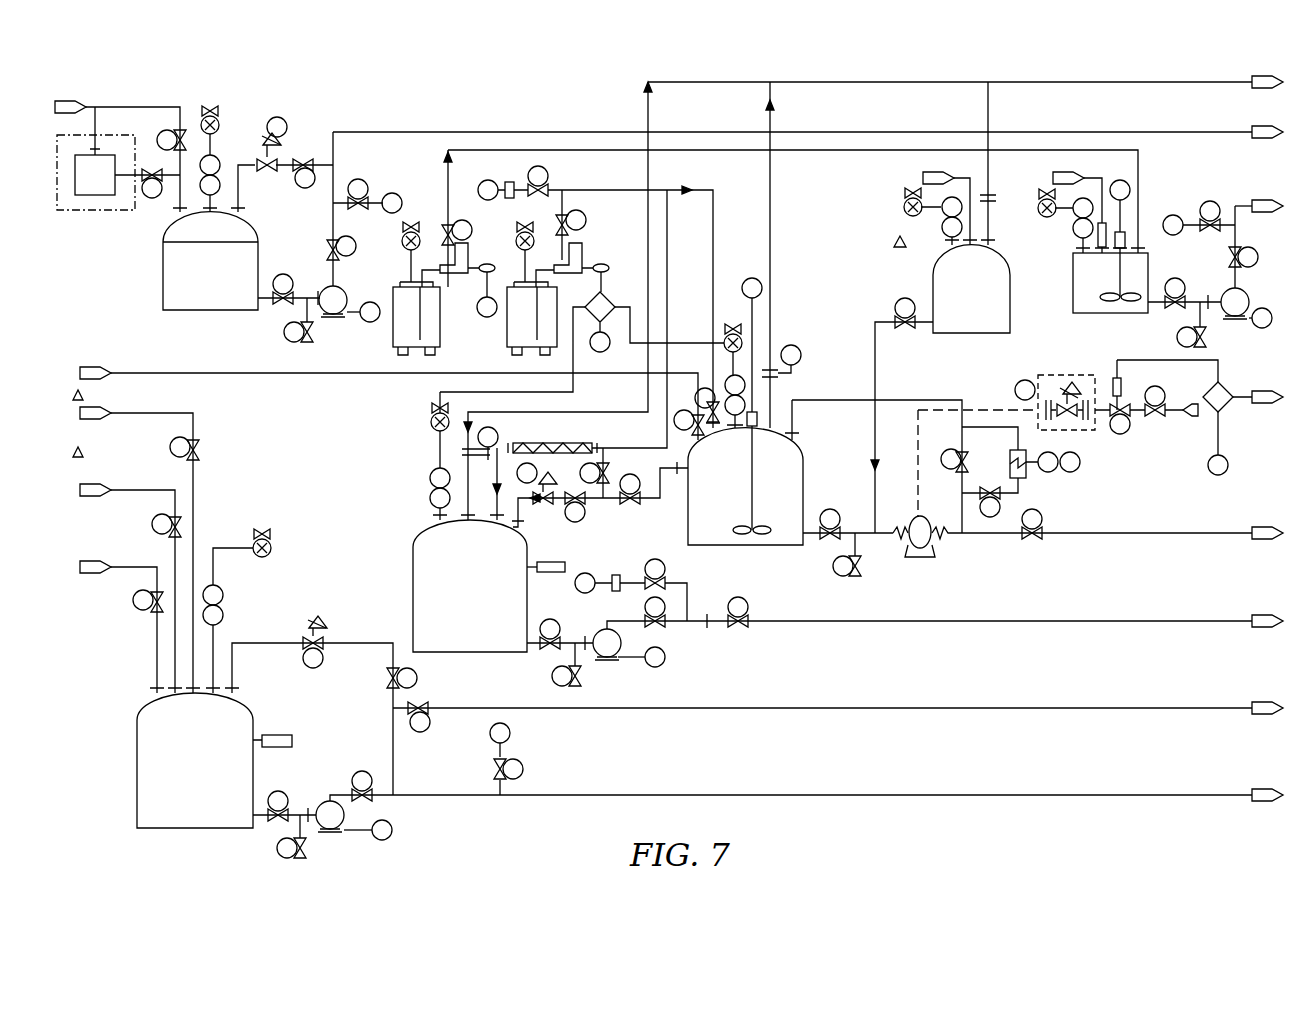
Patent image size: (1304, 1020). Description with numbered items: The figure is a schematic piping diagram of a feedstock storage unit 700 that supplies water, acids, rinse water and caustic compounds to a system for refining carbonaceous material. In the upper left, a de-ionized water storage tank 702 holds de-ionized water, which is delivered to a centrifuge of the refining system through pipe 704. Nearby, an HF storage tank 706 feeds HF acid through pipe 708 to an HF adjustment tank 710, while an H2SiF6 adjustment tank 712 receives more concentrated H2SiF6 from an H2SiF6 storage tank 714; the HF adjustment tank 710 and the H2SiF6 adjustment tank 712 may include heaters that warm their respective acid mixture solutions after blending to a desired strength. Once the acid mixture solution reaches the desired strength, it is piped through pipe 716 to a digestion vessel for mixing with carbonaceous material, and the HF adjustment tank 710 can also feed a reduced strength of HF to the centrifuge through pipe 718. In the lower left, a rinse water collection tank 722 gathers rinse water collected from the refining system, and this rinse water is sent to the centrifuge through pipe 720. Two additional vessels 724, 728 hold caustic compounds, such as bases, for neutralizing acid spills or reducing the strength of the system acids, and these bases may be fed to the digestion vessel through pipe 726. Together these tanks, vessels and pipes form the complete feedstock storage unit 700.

The feedstock storage unit 700 is at (678, 467).
The de-ionized water storage tank 702 is at (230, 291).
The pipe 704 is at (491, 132).
The HF storage tank 706 is at (507, 328).
The pipe 708 is at (716, 232).
The HF adjustment tank 710 is at (492, 611).
The H2SiF6 adjustment tank 712 is at (758, 547).
The H2SiF6 storage tank 714 is at (968, 335).
The pipe 716 is at (1150, 535).
The pipe 718 is at (1008, 623).
The pipe 720 is at (1112, 797).
The rinse water collection tank 722 is at (215, 787).
The vessel 724 is at (393, 338).
The pipe 726 is at (1250, 204).
The vessel 728 is at (1093, 318).